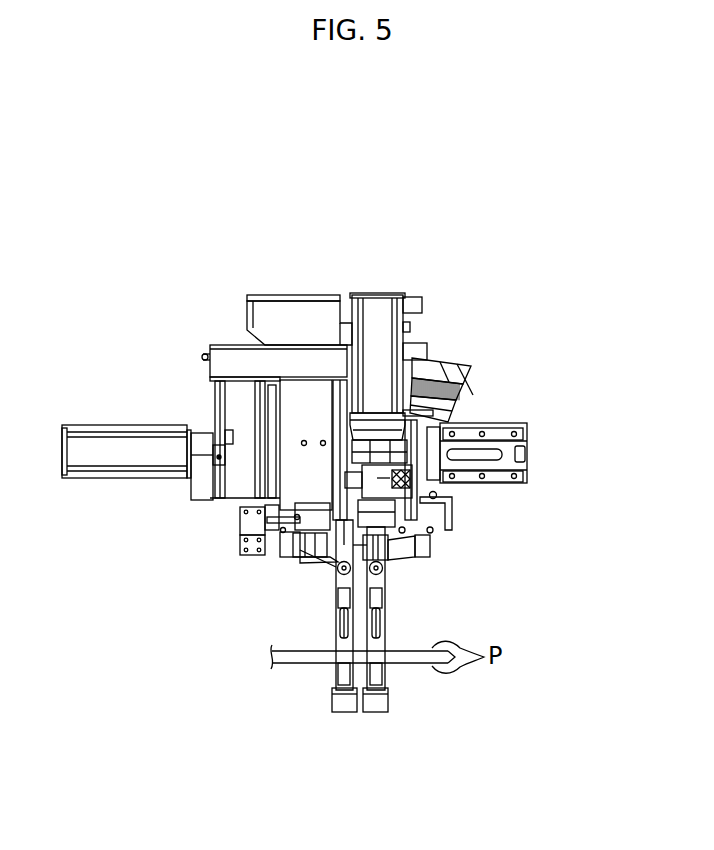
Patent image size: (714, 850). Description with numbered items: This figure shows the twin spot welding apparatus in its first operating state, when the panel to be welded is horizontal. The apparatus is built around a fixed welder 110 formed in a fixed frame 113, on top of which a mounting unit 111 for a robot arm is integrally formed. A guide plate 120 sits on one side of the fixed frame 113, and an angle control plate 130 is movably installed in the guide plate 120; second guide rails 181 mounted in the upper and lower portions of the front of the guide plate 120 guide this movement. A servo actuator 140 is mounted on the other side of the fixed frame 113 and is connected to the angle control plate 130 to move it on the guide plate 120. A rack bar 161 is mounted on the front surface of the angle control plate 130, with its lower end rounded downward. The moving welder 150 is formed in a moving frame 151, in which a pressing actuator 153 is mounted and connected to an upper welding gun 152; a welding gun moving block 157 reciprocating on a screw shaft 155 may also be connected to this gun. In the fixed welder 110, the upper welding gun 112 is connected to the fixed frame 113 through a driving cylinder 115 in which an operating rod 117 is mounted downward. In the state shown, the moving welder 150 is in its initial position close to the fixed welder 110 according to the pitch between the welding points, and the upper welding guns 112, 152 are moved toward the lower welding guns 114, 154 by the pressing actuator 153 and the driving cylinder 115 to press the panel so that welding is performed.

The fixed welder 110 is at (276, 580).
The mounting unit 111 is at (258, 297).
The upper welding gun 112 is at (345, 604).
The fixed frame 113 is at (348, 408).
The lower welding gun 114 is at (338, 687).
The driving cylinder 115 is at (292, 475).
The operating rod 117 is at (310, 518).
The guide plate 120 is at (527, 430).
The angle control plate 130 is at (433, 365).
The servo actuator 140 is at (88, 425).
The moving welder 150 is at (442, 576).
The moving frame 151 is at (410, 397).
The upper welding gun 152 is at (378, 607).
The pressing actuator 153 is at (376, 305).
The lower welding gun 154 is at (392, 688).
The screw shaft 155 is at (410, 484).
The welding gun moving block 157 is at (383, 508).
The rack bar 161 is at (445, 380).
The second guide rail 181 is at (527, 478).